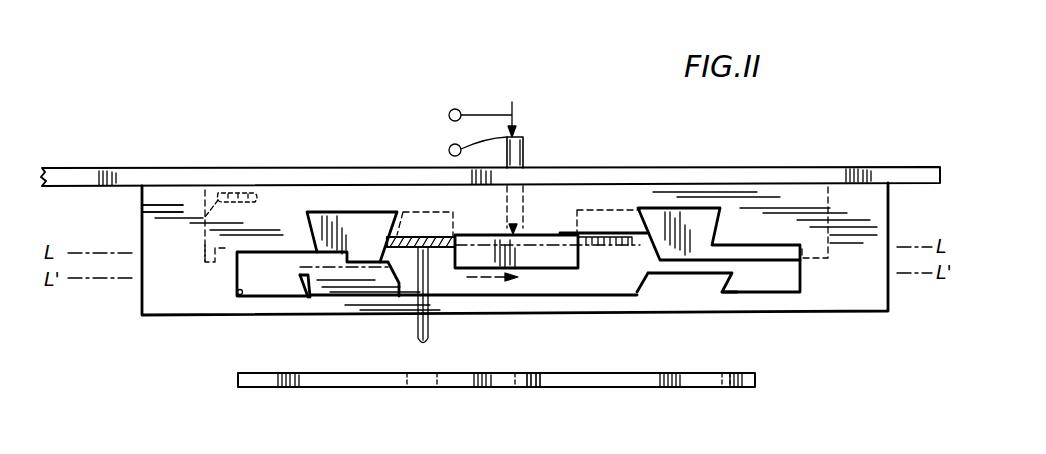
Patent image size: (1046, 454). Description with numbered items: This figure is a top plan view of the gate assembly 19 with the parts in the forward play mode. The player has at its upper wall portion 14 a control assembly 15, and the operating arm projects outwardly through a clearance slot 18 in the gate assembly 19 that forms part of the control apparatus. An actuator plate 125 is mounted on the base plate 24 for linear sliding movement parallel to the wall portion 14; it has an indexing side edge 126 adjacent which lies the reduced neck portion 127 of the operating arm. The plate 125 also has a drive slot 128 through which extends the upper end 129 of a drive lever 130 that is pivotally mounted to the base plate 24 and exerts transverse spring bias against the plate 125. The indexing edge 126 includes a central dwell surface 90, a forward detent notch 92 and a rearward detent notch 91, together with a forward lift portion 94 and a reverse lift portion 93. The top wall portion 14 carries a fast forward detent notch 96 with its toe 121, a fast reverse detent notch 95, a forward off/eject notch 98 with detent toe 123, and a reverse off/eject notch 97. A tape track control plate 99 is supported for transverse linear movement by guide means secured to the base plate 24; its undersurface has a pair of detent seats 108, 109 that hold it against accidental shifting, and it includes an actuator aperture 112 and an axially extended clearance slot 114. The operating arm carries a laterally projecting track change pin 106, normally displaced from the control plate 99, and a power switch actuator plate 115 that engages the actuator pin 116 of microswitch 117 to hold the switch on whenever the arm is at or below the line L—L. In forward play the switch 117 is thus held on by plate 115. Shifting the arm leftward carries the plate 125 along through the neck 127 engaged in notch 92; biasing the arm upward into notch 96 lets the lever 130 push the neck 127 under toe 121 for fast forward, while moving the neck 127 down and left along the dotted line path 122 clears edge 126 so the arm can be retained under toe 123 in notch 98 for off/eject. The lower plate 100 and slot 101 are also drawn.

The upper wall portion 14 is at (142, 300).
The control assembly 15 is at (790, 128).
The clearance slot 18 is at (538, 289).
The gate assembly 19 is at (633, 146).
The base plate 24 is at (180, 166).
The central dwell surface 90 is at (587, 250).
The rearward detent notch 91 is at (585, 250).
The forward detent notch 92 is at (396, 305).
The reverse lift portion 93 is at (765, 262).
The forward lift portion 94 is at (264, 266).
The fast reverse detent notch 95 is at (690, 208).
The fast forward detent notch 96 is at (325, 211).
The reverse off/eject notch 97 is at (733, 292).
The forward off/eject notch 98 is at (240, 295).
The tape track control plate 99 is at (563, 373).
The lower plate 100 is at (755, 373).
The slot 101 is at (537, 388).
The track change pin 106 is at (430, 341).
The detent seat 108 is at (727, 380).
The detent seat 109 is at (522, 387).
The actuator aperture 112 is at (412, 371).
The clearance slot 114 is at (637, 389).
The power switch actuator plate 115 is at (203, 268).
The actuator pin 116 is at (525, 155).
The microswitch 117 is at (512, 103).
The toe 121 is at (386, 236).
The dotted line path 122 is at (340, 265).
The detent toe 123 is at (288, 288).
The actuator plate 125 is at (800, 197).
The indexing side edge 126 is at (787, 262).
The reduced neck portion 127 is at (430, 237).
The drive slot 128 is at (203, 167).
The upper end 129 is at (206, 222).
The drive lever 130 is at (237, 190).